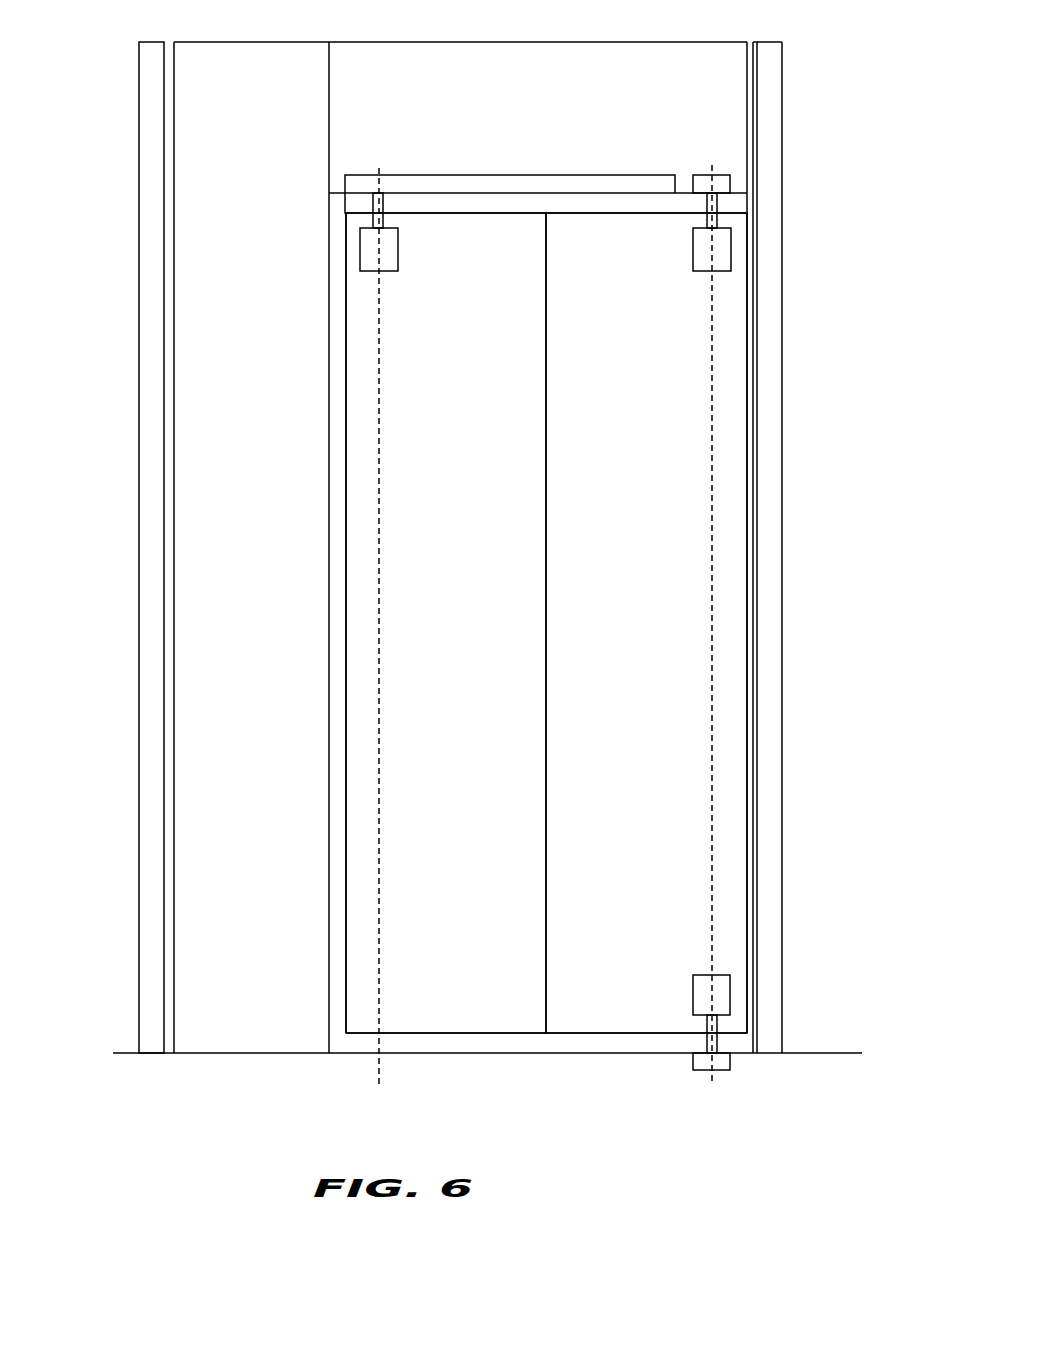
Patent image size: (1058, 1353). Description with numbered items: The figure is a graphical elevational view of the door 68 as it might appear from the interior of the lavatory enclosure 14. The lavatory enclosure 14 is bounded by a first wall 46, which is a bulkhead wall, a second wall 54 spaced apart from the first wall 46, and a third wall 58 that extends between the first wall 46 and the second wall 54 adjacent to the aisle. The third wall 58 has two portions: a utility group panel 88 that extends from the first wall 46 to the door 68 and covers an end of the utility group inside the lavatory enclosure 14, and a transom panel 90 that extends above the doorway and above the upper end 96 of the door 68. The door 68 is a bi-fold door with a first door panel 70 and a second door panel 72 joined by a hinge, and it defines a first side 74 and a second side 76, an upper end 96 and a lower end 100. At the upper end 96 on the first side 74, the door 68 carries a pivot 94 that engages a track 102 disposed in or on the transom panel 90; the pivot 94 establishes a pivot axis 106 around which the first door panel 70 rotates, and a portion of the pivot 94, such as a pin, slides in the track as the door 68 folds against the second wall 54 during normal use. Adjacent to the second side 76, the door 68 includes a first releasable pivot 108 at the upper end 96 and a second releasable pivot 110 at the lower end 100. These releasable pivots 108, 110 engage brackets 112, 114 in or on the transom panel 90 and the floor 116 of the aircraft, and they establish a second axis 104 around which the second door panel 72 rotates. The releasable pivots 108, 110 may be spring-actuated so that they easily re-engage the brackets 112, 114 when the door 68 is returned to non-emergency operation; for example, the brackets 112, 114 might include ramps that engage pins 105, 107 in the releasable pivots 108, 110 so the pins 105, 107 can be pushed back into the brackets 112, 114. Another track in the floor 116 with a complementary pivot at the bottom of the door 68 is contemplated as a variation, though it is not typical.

The lavatory enclosure 14 is at (126, 180).
The first wall 46 is at (138, 767).
The second wall 54 is at (781, 538).
The third wall 58 is at (118, 547).
The utility group panel 88 is at (195, 393).
The door 68 is at (560, 623).
The first door panel 70 is at (407, 508).
The second door panel 72 is at (678, 451).
The first side 74 is at (346, 840).
The second side 76 is at (748, 715).
The transom panel 90 is at (717, 86).
The pivot 94 is at (398, 250).
The upper end 96 is at (603, 210).
The lower end 100 is at (603, 1033).
The track 102 is at (447, 175).
The second axis 104 is at (711, 658).
The pin 105 is at (717, 202).
The pivot axis 106 is at (379, 735).
The pin 107 is at (717, 1038).
The first releasable pivot 108 is at (731, 250).
The second releasable pivot 110 is at (730, 993).
The bracket 112 is at (730, 184).
The bracket 114 is at (730, 1067).
The floor 116 is at (220, 1053).